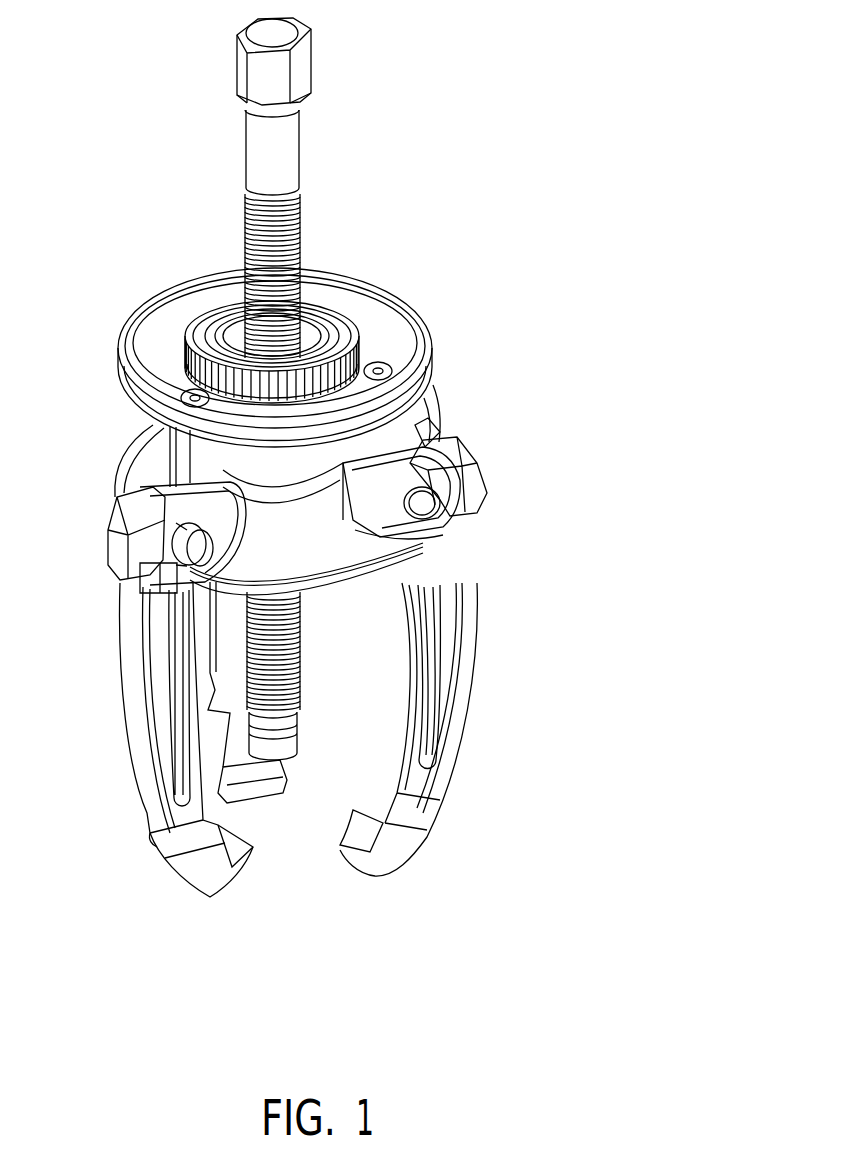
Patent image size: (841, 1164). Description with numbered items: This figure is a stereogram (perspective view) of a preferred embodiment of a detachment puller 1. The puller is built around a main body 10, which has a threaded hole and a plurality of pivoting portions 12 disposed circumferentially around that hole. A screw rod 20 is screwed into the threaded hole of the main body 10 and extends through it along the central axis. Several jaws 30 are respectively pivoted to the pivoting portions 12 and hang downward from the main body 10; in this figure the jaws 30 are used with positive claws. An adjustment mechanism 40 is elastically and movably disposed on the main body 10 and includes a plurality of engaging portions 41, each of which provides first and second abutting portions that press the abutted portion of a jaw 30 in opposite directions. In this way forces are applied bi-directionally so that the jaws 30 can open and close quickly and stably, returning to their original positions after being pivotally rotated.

The detachment puller 1 is at (434, 166).
The main body 10 is at (114, 452).
The pivoting portion 12 is at (98, 544).
The screw rod 20 is at (257, 153).
The jaw 30 is at (135, 700).
The adjustment mechanism 40 is at (385, 326).
The engaging portion 41 is at (430, 422).